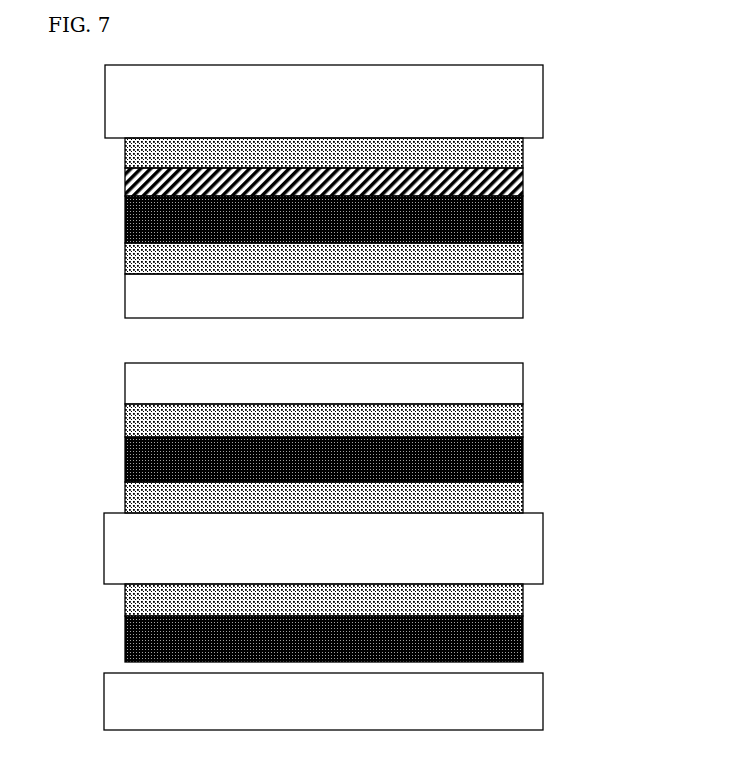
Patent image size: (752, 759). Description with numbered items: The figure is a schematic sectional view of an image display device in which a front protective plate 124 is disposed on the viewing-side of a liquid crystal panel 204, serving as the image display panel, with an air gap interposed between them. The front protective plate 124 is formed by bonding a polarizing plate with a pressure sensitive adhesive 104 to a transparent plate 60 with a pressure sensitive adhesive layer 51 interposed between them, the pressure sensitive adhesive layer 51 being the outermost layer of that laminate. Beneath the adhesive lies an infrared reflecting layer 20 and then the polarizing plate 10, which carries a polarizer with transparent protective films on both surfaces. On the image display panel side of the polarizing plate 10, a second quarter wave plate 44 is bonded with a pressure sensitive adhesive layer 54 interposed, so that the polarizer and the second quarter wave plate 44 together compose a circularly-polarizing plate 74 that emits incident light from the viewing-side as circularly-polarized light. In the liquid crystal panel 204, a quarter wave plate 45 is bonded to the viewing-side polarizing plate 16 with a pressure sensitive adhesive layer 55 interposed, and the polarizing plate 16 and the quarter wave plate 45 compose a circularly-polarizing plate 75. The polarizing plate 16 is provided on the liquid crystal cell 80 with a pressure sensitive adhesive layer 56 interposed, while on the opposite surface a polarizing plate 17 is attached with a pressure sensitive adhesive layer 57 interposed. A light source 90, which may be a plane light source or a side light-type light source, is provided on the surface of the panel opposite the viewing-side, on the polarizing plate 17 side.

The transparent plate 60 is at (530, 103).
The pressure sensitive adhesive layer 51 is at (525, 150).
The infrared reflecting layer 20 is at (525, 185).
The polarizing plate 10 is at (525, 222).
The pressure sensitive adhesive layer 54 is at (525, 258).
The second quarter wave plate 44 is at (518, 296).
The circularly-polarizing plate 74 is at (137, 305).
The polarizing plate with a pressure sensitive adhesive 104 is at (622, 135).
The front protective plate 124 is at (632, 80).
The quarter wave plate 45 is at (523, 388).
The pressure sensitive adhesive layer 55 is at (527, 422).
The polarizing plate 16 is at (525, 458).
The pressure sensitive adhesive layer 56 is at (525, 497).
The circularly-polarizing plate 75 is at (125, 458).
The liquid crystal cell 80 is at (530, 549).
The pressure sensitive adhesive layer 57 is at (525, 600).
The polarizing plate 17 is at (525, 631).
The liquid crystal panel 204 is at (620, 373).
The light source 90 is at (530, 702).